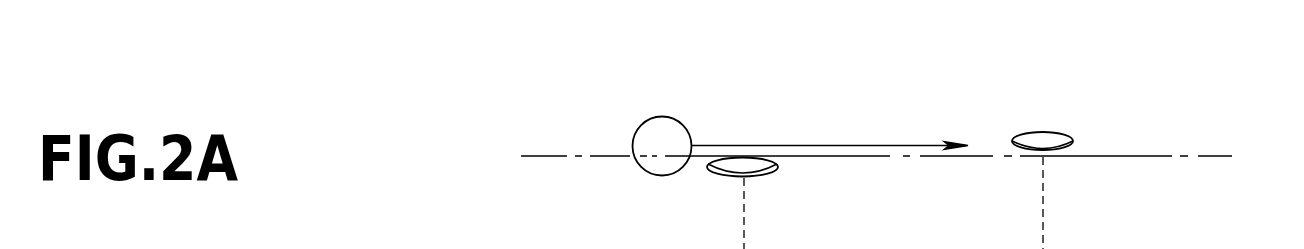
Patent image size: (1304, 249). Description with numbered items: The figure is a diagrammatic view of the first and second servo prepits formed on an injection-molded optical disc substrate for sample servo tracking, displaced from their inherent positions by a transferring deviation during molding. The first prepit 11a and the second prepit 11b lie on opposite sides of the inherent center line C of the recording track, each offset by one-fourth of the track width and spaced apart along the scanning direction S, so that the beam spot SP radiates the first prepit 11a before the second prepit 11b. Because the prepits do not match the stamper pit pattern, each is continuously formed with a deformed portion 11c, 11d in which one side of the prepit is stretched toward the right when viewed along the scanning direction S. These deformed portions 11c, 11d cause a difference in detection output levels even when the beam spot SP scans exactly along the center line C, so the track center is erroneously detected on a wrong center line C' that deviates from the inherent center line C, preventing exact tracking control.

The beam spot SP is at (678, 120).
The wrong center line C' is at (829, 107).
The scanning direction S is at (955, 144).
The center line C is at (876, 113).
The first prepit 11a is at (777, 166).
The deformed portion 11c is at (735, 178).
The second prepit 11b is at (1050, 131).
The deformed portion 11d is at (1058, 151).